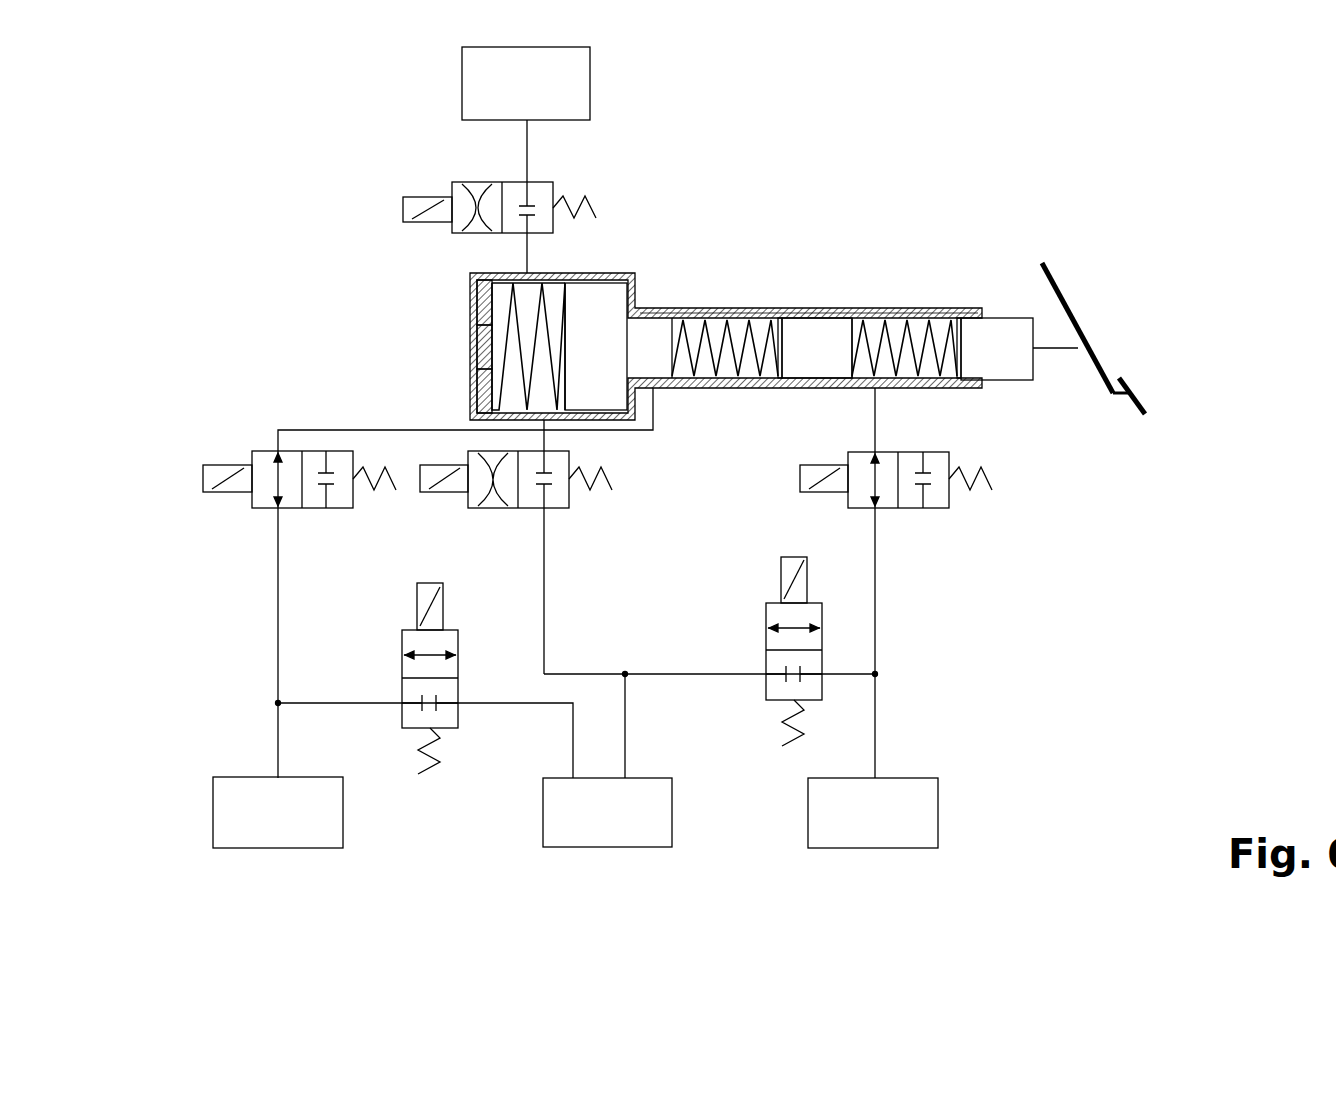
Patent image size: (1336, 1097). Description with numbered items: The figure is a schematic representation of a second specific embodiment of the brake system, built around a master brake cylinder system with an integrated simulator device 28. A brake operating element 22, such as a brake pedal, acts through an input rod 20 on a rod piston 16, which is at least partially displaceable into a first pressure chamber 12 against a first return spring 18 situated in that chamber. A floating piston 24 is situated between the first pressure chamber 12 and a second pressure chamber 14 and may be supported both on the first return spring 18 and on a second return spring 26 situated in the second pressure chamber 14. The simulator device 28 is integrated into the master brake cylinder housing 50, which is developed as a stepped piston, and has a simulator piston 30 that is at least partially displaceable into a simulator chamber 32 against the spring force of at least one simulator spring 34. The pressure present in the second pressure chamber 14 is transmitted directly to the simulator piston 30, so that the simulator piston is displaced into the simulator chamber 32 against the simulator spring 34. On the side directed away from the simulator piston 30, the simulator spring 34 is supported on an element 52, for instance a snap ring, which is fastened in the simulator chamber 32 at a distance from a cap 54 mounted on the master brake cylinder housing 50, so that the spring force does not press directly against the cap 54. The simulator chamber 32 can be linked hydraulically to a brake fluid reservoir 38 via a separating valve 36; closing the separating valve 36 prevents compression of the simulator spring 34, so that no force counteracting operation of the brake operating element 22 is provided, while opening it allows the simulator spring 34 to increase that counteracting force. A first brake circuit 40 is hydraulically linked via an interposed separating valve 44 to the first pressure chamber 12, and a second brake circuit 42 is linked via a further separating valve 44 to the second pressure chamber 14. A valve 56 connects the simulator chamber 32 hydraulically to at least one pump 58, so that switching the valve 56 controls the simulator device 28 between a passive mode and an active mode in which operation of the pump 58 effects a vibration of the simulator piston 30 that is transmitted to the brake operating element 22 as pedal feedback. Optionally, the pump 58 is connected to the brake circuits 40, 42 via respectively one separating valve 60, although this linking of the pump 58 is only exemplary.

The first pressure chamber 12 is at (900, 374).
The second pressure chamber 14 is at (727, 328).
The rod piston 16 is at (1003, 374).
The first return spring 18 is at (956, 380).
The input rod 20 is at (1060, 352).
The brake operating element 22 is at (1070, 300).
The floating piston 24 is at (826, 372).
The second return spring 26 is at (734, 386).
The simulator device 28 is at (450, 418).
The simulator piston 30 is at (606, 294).
The simulator chamber 32 is at (546, 286).
The simulator spring 34 is at (477, 355).
The separating valve 36 is at (533, 180).
The brake fluid reservoir 38 is at (590, 82).
The first brake circuit 40 is at (938, 811).
The second brake circuit 42 is at (213, 810).
The separating valve 44 is at (230, 493).
The master brake cylinder housing 50 is at (950, 310).
The element 52 is at (477, 293).
The cap 54 is at (477, 324).
The valve 56 is at (497, 508).
The pump 58 is at (543, 810).
The separating valve 60 is at (402, 640).